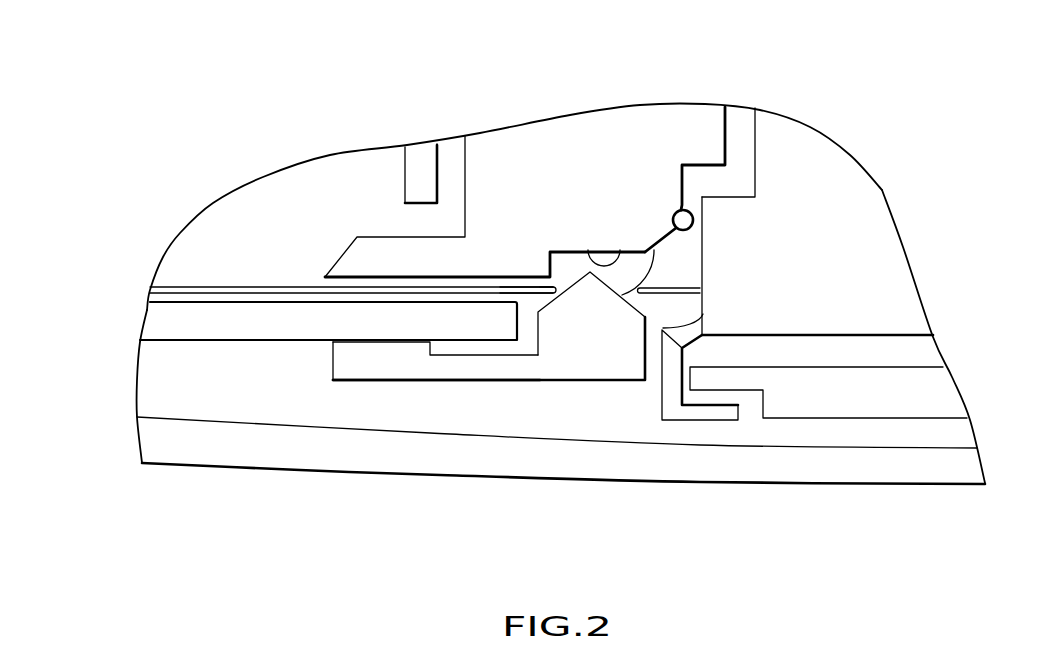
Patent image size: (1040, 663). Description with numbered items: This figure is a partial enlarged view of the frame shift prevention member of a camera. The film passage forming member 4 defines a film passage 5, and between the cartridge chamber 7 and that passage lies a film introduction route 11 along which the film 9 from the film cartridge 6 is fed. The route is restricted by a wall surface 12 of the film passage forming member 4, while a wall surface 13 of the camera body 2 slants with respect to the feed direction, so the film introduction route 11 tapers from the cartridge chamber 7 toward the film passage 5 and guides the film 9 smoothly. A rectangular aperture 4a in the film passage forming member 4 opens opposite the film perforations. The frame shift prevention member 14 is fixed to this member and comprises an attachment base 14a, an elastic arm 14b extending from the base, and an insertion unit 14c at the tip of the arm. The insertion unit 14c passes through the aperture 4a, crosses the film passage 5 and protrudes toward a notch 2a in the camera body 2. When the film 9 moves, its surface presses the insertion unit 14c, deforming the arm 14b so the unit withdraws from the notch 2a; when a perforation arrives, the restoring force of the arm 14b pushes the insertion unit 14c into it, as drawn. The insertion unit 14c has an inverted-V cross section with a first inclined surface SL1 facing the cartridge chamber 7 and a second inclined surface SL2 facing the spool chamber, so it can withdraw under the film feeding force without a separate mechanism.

The camera body 2 is at (530, 137).
The notch 2a is at (589, 250).
The film passage forming member 4 is at (153, 323).
The rectangular aperture 4a is at (520, 312).
The film passage 5 is at (567, 267).
The film cartridge 6 is at (888, 248).
The cartridge chamber 7 is at (742, 120).
The film 9 is at (670, 288).
The film introduction route 11 is at (693, 327).
The wall surface 12 is at (702, 307).
The wall surface 13 is at (681, 210).
The frame shift prevention member 14 is at (558, 382).
The attachment base 14a is at (347, 363).
The arm 14b is at (467, 367).
The insertion unit 14c is at (598, 322).
The first inclined surface SL1 is at (647, 248).
The second inclined surface SL2 is at (556, 285).